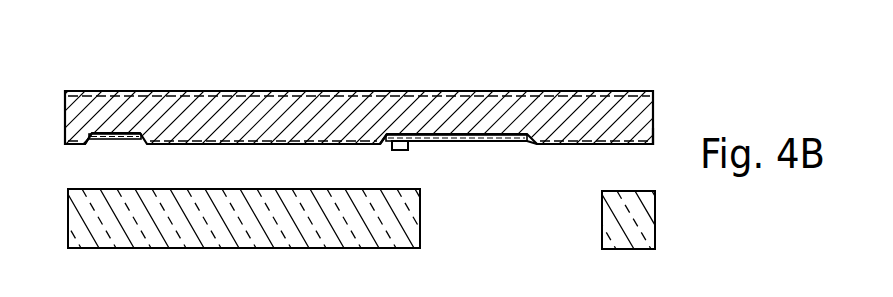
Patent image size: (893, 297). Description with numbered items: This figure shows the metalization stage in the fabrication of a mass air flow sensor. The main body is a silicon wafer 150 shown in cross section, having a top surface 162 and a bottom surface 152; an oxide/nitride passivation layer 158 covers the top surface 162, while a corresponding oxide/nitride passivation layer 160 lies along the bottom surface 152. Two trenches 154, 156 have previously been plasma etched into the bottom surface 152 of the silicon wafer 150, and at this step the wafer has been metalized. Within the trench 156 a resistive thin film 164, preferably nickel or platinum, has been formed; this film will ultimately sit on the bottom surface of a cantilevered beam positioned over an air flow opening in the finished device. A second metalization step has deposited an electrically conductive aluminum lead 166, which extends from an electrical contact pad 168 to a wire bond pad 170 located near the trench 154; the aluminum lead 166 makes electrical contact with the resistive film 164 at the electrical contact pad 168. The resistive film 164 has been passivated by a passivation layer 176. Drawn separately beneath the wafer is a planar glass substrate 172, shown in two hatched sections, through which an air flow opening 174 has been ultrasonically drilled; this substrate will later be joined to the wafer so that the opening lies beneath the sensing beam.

The silicon wafer 150 is at (240, 96).
The bottom surface 152 is at (250, 146).
The trench 154 is at (88, 144).
The trench 156 is at (380, 146).
The oxide/nitride passivation layer 158 is at (550, 95).
The oxide/nitride passivation layer 160 is at (628, 147).
The top surface 162 is at (370, 94).
The resistive thin film 164 is at (483, 147).
The electrically conductive aluminum lead 166 is at (122, 145).
The electrical contact pad 168 is at (400, 151).
The wire bond pad 170 is at (92, 145).
The planar glass substrate 172 is at (290, 246).
The air flow opening 174 is at (526, 247).
The passivation layer 176 is at (498, 146).